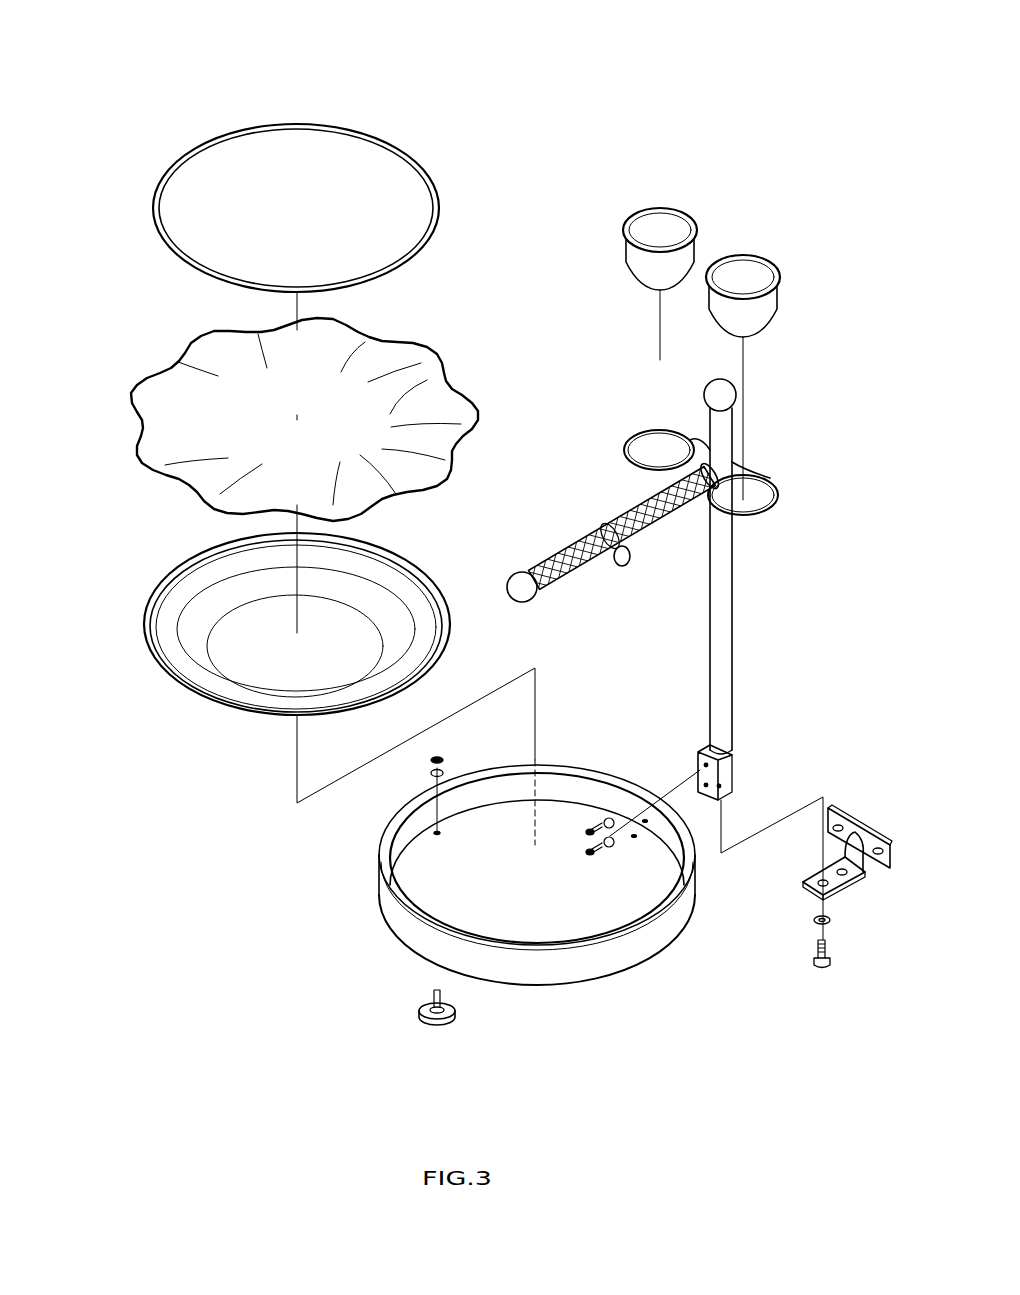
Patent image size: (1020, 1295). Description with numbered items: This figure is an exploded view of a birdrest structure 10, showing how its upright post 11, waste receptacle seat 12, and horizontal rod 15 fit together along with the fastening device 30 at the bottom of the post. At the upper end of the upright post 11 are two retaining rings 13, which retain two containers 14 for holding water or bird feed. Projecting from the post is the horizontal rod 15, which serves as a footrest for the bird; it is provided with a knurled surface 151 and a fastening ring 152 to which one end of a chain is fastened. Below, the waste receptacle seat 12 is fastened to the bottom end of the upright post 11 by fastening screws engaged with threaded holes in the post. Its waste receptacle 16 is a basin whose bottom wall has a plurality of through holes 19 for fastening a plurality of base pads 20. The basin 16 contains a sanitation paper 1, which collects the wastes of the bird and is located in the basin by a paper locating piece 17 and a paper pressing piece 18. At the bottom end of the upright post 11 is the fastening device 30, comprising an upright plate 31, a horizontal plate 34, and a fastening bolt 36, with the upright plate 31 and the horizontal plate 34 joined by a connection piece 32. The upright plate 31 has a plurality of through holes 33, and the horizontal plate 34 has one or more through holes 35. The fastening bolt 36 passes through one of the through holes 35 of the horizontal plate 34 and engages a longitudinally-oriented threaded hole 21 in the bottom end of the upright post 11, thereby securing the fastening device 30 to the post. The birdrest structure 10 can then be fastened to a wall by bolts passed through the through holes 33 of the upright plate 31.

The birdrest structure 10 is at (530, 127).
The waste receptacle seat 12 is at (112, 190).
The paper pressing piece 18 is at (447, 206).
The sanitation paper 1 is at (470, 373).
The paper locating piece 17 is at (248, 710).
The through holes 19 is at (435, 833).
The waste receptacle 16 is at (578, 985).
The base pads 20 is at (432, 1027).
The containers 14 is at (738, 255).
The retaining rings 13 is at (632, 433).
The horizontal rod 15 is at (527, 598).
The knurled surface 151 is at (602, 562).
The fastening ring 152 is at (625, 572).
The upright post 11 is at (733, 637).
The threaded hole 21 is at (720, 786).
The fastening device 30 is at (857, 797).
The upright plate 31 is at (866, 830).
The connection piece 32 is at (858, 856).
The through holes 33 is at (882, 848).
The horizontal plate 34 is at (805, 880).
The through holes 35 is at (815, 886).
The fastening bolt 36 is at (812, 958).